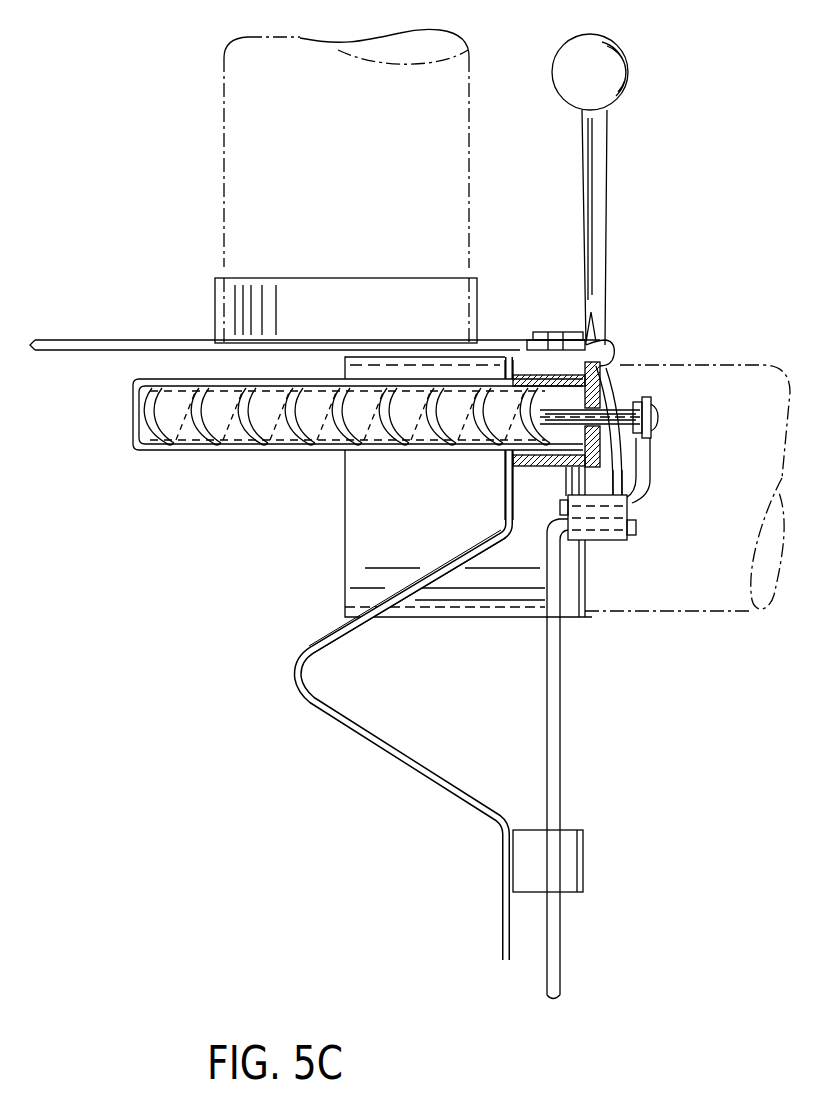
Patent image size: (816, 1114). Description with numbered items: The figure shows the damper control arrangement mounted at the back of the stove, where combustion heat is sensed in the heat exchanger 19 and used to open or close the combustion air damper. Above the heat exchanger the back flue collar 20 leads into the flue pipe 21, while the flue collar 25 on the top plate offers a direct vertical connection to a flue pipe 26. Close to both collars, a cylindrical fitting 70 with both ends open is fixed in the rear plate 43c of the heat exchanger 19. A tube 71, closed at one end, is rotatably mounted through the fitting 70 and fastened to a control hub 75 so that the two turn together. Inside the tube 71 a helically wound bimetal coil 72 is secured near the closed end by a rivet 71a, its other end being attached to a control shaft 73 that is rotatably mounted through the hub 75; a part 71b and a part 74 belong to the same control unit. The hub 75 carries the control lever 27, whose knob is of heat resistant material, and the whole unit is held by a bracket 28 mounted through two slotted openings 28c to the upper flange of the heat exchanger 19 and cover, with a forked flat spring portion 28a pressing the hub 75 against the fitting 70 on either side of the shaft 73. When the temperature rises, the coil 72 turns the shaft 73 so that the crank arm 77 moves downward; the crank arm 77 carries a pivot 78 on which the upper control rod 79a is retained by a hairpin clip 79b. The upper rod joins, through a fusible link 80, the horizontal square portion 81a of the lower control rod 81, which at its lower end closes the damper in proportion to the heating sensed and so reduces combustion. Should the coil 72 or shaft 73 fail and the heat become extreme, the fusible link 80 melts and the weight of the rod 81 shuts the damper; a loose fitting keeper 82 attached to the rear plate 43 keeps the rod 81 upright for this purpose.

The heat exchanger 19 is at (240, 557).
The flue collar 20 is at (443, 620).
The flue pipe 21 is at (690, 616).
The flue collar 25 is at (479, 284).
The flue pipe 26 is at (472, 181).
The control lever 27 is at (607, 260).
The bracket 28 is at (615, 345).
The forked flat spring portion 28a is at (613, 542).
The openings 28c is at (552, 332).
The rear plate 43 is at (502, 862).
The rear plate 43c is at (504, 518).
The cylindrical fitting 70 is at (504, 488).
The tube 71 is at (150, 452).
The rivet 71a is at (150, 380).
The tube end support 71b is at (566, 482).
The bimetal coil 72 is at (250, 452).
The control shaft 73 is at (560, 464).
The bearing plate 74 is at (601, 396).
The control hub 75 is at (583, 545).
The crank arm 77 is at (616, 488).
The pivot 78 is at (654, 426).
The upper control rod 79a is at (652, 462).
The hairpin clip 79b is at (656, 409).
The fusible link 80 is at (628, 519).
The lower control rod 81 is at (562, 680).
The horizontal portion of square cross-section 81a is at (637, 530).
The keeper 82 is at (585, 862).